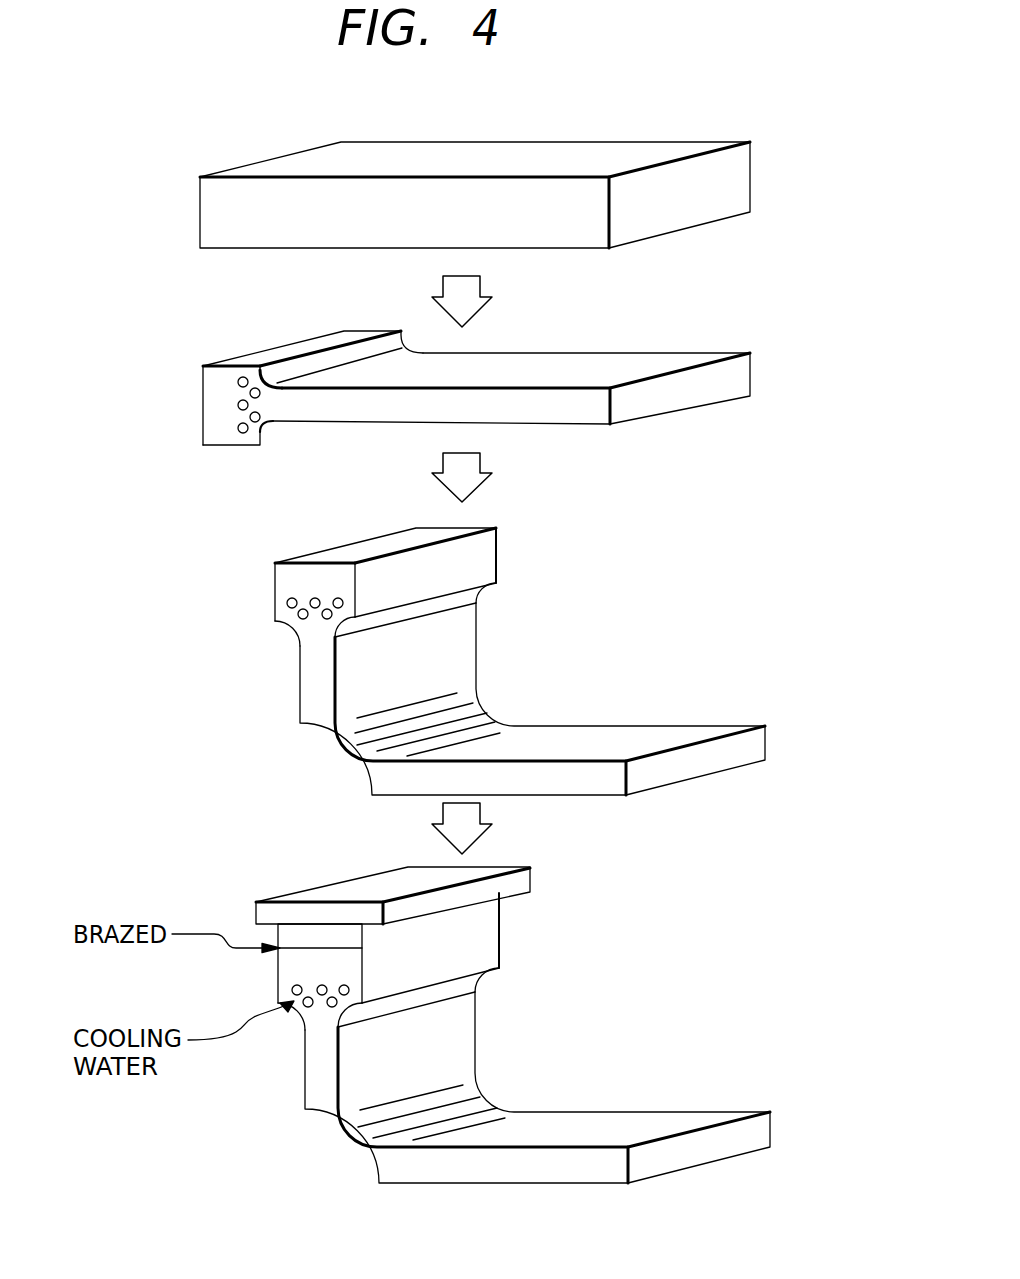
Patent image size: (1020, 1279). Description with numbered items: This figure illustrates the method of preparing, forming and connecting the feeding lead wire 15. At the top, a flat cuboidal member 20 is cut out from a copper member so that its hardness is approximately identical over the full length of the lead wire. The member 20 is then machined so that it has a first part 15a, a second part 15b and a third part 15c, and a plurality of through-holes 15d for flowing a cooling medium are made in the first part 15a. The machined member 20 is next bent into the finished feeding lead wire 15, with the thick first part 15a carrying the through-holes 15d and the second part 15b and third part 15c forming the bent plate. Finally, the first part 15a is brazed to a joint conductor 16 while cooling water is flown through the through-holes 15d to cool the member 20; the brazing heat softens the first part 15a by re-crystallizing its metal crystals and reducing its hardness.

The feeding lead wire 15 is at (597, 737).
The first part 15a is at (211, 435).
The second part 15b is at (383, 413).
The third part 15c is at (273, 422).
The through-holes 15d is at (243, 376).
The joint conductor 16 is at (268, 913).
The flat cuboidal member 20 is at (665, 147).